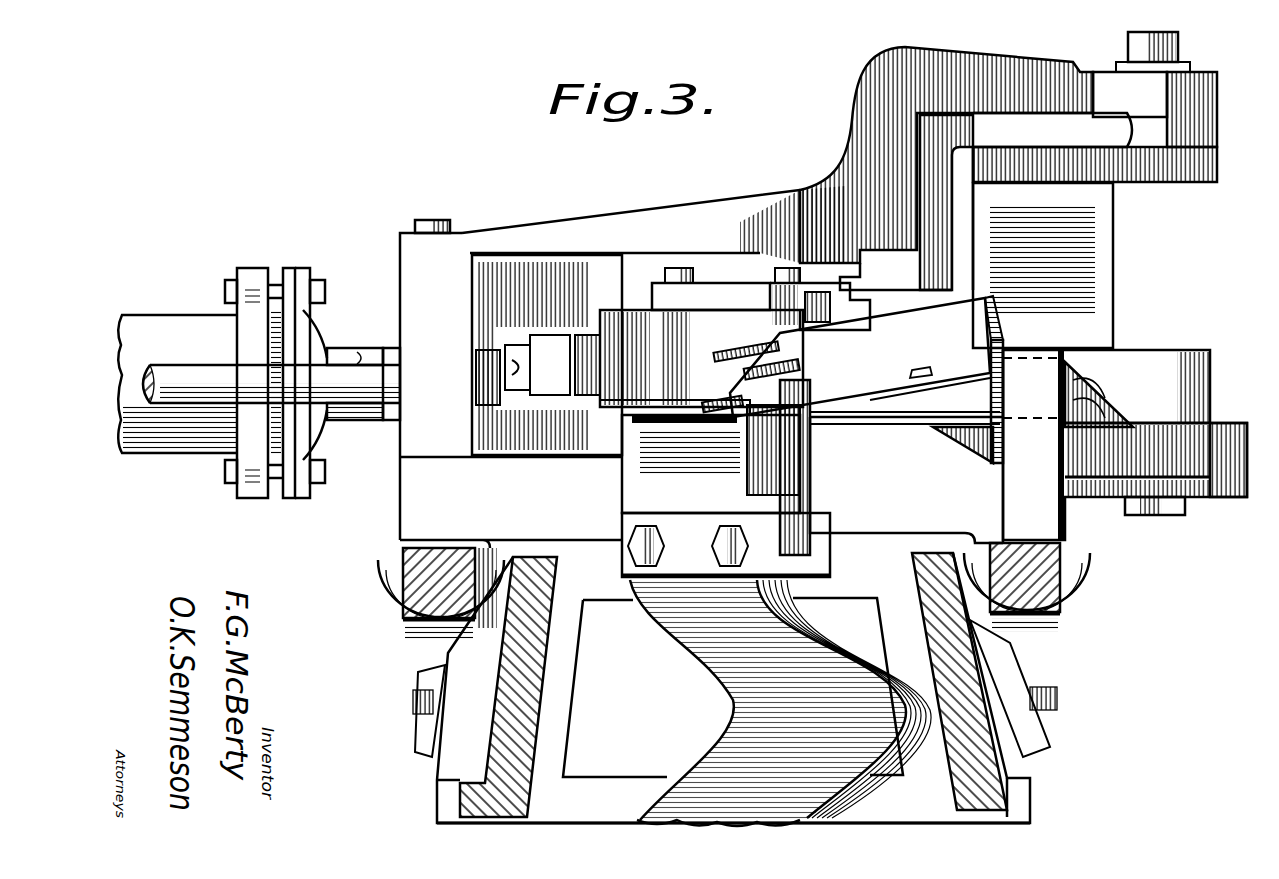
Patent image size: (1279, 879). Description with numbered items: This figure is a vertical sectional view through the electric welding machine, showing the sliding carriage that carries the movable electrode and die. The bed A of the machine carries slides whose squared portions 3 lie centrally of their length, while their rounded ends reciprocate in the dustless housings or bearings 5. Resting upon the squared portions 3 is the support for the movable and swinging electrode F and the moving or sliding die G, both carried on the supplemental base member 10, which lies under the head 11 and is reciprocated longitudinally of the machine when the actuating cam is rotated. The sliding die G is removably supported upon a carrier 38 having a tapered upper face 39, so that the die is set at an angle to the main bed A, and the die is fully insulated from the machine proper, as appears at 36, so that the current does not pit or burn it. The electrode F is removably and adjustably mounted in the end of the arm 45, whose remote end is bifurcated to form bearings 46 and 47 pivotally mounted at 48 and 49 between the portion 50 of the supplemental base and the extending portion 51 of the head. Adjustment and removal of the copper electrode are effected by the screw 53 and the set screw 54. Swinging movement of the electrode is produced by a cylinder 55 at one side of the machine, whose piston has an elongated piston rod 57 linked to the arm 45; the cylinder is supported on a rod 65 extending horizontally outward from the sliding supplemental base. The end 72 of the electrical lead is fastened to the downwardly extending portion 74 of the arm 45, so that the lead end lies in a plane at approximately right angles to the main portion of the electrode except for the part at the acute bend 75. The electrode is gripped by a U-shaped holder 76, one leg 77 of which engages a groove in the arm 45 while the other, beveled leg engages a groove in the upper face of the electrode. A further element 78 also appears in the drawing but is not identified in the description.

The squared portions 3 is at (430, 597).
The dustless housings or bearings 5 is at (392, 570).
The supplemental base member 10 is at (511, 384).
The head 11 is at (712, 212).
The insulation 36 is at (1000, 343).
The die carrier 38 is at (918, 402).
The tapered upper face 39 is at (858, 398).
The electrode carrying arm 45 is at (1097, 249).
The bearing 46 is at (1182, 165).
The bearing 47 is at (1152, 385).
The pivot 48 is at (1140, 60).
The pivot 49 is at (1160, 508).
The portion of the supplemental base 50 is at (1222, 425).
The extending portion of the head 51 is at (1130, 94).
The bolt or screw 53 is at (682, 275).
The set screw 54 is at (520, 358).
The cylinder 55 is at (177, 384).
The elongated piston rod 57 is at (395, 357).
The rod 65 is at (271, 384).
The end of lead 72 is at (726, 545).
The downwardly extending portion 74 is at (711, 459).
The acute bend 75 is at (740, 748).
The holder 76 is at (715, 283).
The leg of holder 77 is at (828, 300).
The teeth 78 is at (765, 375).
The bed A is at (1000, 680).
The movable and swinging electrode F is at (701, 362).
The moving or sliding die G is at (860, 357).